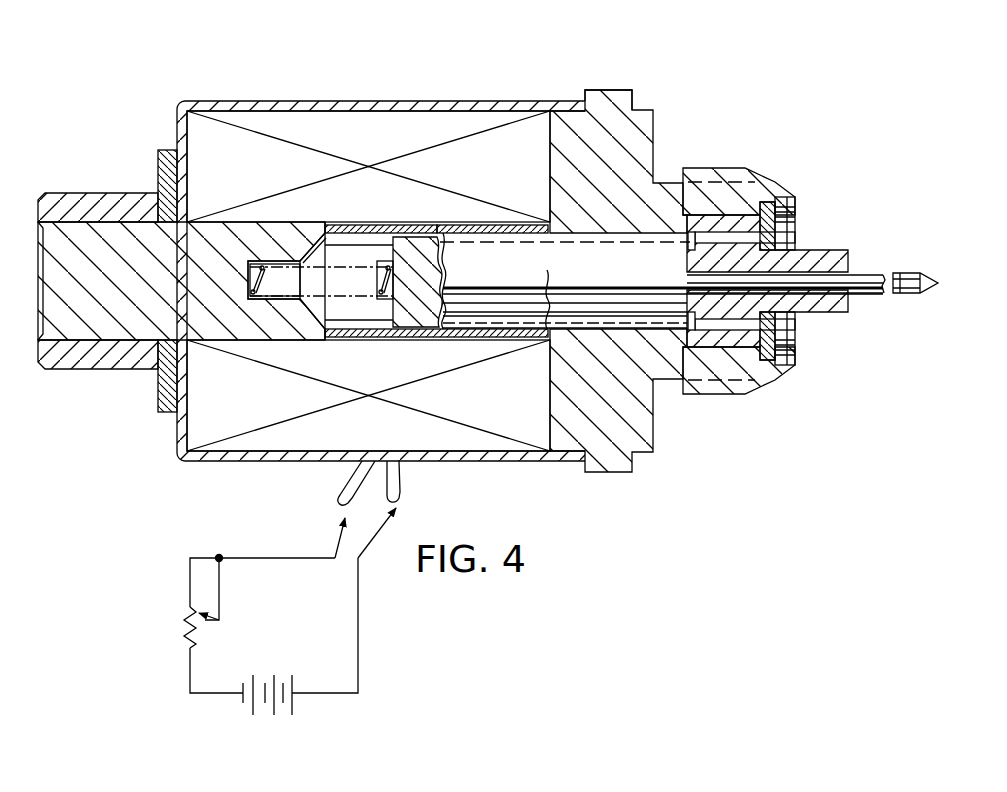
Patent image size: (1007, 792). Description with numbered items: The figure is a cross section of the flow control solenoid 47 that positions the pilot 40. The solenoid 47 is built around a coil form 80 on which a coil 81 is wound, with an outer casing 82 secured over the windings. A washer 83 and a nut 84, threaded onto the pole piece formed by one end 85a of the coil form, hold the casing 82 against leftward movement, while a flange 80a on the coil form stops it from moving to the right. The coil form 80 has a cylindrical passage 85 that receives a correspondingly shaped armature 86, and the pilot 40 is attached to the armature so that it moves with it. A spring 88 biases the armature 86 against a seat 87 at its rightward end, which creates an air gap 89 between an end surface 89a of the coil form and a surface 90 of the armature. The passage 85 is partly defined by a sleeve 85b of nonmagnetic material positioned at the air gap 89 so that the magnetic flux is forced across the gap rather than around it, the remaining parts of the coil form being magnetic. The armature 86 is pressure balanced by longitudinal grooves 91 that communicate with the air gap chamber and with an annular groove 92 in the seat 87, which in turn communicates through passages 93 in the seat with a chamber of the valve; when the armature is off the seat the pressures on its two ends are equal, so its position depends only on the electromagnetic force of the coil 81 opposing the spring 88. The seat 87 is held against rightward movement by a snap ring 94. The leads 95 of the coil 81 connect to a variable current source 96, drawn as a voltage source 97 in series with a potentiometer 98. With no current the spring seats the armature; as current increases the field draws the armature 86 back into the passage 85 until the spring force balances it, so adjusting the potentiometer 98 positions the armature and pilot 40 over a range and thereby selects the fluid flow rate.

The pilot 40 is at (866, 297).
The solenoid 47 is at (710, 110).
The coil form 80 is at (656, 428).
The flange 80a is at (582, 99).
The coil 81 is at (522, 456).
The outer casing 82 is at (222, 463).
The washer 83 is at (168, 413).
The nut 84 is at (118, 360).
The cylindrical passage 85 is at (498, 234).
The end of coil form 85a is at (42, 336).
The sleeve 85b is at (437, 225).
The armature 86 is at (612, 246).
The seat 87 is at (823, 310).
The spring 88 is at (337, 290).
The air gap 89 is at (381, 300).
The end surface of coil form 89a is at (312, 254).
The surface of armature 90 is at (395, 320).
The longitudinal grooves 91 is at (542, 246).
The annular groove 92 is at (688, 326).
The passages 93 is at (796, 240).
The snap ring 94 is at (782, 340).
The leads 95 is at (340, 505).
The variable current source 96 is at (250, 615).
The voltage source 97 is at (270, 672).
The potentiometer 98 is at (212, 622).